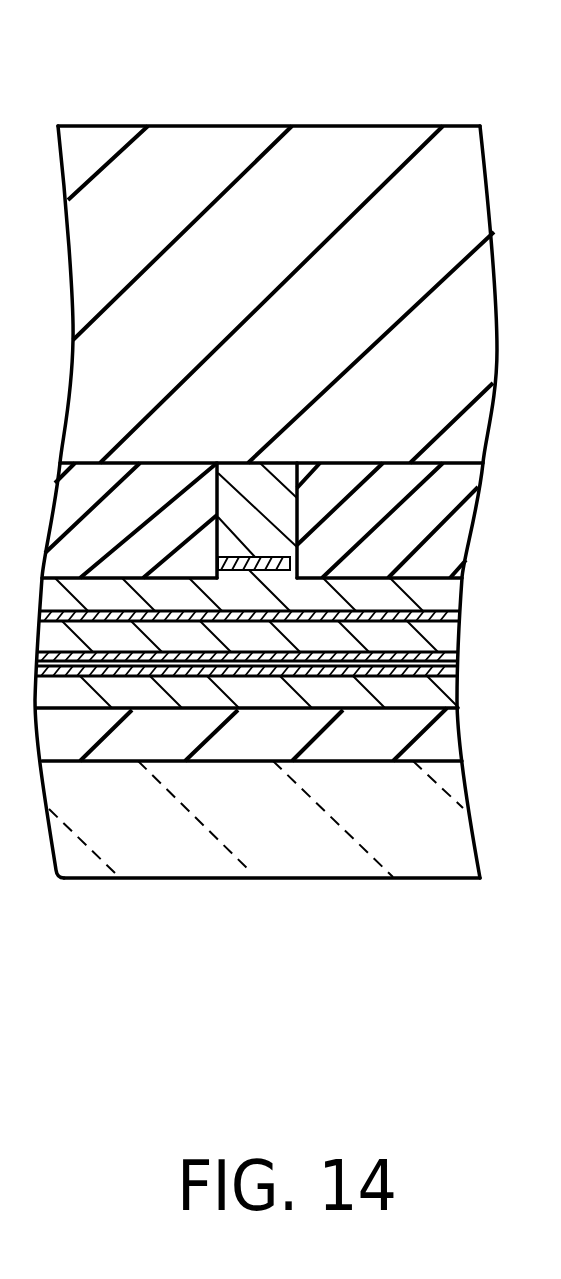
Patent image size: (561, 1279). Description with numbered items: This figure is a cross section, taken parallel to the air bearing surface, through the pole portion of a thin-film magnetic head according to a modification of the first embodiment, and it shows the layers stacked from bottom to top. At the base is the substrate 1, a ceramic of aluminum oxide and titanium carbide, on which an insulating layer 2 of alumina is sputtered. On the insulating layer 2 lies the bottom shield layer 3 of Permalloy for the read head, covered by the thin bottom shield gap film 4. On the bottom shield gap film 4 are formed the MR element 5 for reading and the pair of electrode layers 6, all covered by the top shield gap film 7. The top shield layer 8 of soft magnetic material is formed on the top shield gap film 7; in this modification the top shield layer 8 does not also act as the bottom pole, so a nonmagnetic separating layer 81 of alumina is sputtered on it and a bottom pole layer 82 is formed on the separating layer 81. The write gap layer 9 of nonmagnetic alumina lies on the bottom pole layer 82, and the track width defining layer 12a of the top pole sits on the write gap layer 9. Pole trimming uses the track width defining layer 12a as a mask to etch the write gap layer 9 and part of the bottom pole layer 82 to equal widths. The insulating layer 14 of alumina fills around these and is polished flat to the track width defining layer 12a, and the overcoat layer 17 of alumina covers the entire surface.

The substrate 1 is at (79, 862).
The insulating layer 2 is at (117, 753).
The bottom shield layer 3 is at (163, 700).
The bottom shield gap film 4 is at (309, 665).
The MR element 5 is at (255, 662).
The electrode layers 6 is at (374, 662).
The top shield gap film 7 is at (205, 662).
The top shield layer 8 is at (429, 673).
The separating layer 81 is at (147, 611).
The bottom pole layer 82 is at (391, 611).
The write gap layer 9 is at (300, 558).
The track width defining layer 12a is at (247, 481).
The insulating layer 14 is at (103, 482).
The overcoat layer 17 is at (388, 152).